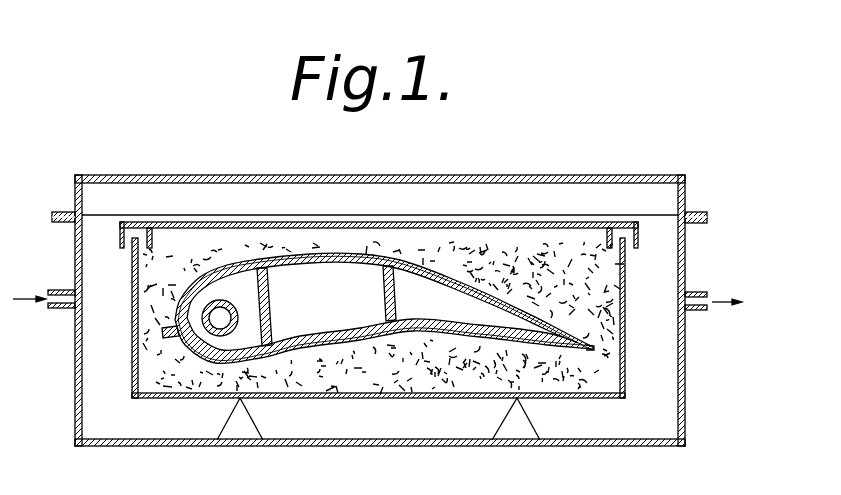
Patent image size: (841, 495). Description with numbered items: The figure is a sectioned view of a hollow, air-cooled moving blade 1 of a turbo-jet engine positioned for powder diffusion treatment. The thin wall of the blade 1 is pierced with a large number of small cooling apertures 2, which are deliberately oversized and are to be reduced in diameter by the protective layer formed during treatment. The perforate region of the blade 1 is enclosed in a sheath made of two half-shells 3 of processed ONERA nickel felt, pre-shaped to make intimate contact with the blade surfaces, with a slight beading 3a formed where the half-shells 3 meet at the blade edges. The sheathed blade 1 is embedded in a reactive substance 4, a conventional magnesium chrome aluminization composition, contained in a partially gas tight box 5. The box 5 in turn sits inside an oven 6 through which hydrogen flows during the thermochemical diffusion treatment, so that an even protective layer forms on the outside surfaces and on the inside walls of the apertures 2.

The moving blade 1 is at (376, 310).
The apertures 2 is at (360, 320).
The half-shells 3 is at (288, 262).
The beading 3a is at (162, 334).
The reactive substance 4 is at (325, 367).
The partially gas tight box 5 is at (422, 393).
The oven 6 is at (685, 410).